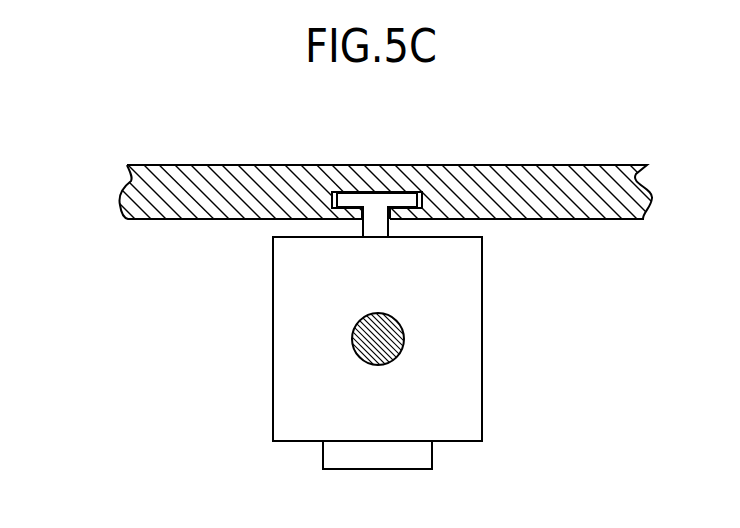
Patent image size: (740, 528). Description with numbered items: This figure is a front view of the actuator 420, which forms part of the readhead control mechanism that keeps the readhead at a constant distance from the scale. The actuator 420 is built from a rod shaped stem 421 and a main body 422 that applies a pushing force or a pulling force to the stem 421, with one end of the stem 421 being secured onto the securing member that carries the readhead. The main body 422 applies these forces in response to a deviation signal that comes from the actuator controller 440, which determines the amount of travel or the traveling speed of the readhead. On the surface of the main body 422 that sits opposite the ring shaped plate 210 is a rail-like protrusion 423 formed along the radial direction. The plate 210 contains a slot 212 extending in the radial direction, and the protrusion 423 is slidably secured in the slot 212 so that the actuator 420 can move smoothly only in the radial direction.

The plate 210 is at (547, 165).
The slot 212 is at (418, 166).
The actuator 420 is at (261, 317).
The stem 421 is at (353, 343).
The main body 422 is at (273, 302).
The protrusion 423 is at (378, 240).
The actuator controller 440 is at (323, 452).